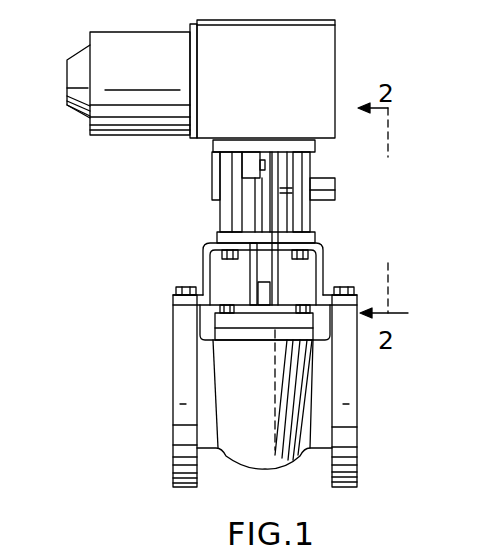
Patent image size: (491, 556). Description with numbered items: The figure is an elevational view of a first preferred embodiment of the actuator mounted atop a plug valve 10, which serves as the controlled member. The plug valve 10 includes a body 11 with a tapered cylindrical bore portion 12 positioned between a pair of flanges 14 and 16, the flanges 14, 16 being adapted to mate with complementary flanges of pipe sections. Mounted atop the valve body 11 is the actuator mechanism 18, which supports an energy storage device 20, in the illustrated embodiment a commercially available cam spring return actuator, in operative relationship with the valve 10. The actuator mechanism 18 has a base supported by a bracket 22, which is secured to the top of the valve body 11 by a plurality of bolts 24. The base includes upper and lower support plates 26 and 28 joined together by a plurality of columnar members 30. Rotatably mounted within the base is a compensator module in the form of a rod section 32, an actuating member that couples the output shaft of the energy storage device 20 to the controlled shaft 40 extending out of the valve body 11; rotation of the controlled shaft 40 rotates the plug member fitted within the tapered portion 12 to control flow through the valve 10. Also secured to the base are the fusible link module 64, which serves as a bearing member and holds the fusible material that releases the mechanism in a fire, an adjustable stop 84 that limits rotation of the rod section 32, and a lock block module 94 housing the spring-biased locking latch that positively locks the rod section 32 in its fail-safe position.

The plug valve 10 is at (234, 496).
The body 11 is at (318, 402).
The tapered cylindrical bore portion 12 is at (230, 376).
The flange 14 is at (180, 419).
The flange 16 is at (343, 434).
The actuator mechanism 18 is at (172, 184).
The energy storage device 20 is at (283, 80).
The bracket 22 is at (205, 262).
The bolts 24 is at (178, 290).
The upper support plate 26 is at (213, 145).
The lower support plate 28 is at (318, 237).
The columnar members 30 is at (220, 222).
The rod section 32 is at (280, 272).
The controlled shaft 40 is at (260, 306).
The fusible link module 64 is at (327, 182).
The adjustable stop 84 is at (248, 158).
The lock block module 94 is at (212, 178).